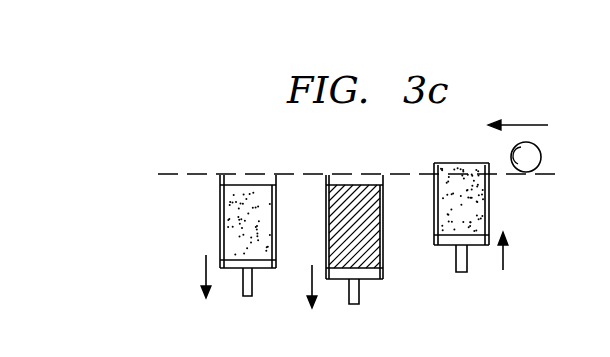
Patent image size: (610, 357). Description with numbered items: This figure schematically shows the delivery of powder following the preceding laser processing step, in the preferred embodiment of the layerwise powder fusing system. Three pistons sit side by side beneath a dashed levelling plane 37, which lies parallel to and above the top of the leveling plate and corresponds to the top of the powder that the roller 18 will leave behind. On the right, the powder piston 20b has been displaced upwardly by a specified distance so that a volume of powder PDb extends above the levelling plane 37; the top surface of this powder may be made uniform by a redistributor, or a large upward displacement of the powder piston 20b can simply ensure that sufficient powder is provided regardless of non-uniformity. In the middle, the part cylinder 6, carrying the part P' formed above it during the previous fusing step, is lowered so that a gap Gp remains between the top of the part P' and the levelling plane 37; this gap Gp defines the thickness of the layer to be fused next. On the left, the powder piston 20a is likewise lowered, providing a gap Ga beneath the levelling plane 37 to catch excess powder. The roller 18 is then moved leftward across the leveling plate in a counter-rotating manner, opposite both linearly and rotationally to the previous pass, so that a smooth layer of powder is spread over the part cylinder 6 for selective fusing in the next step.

The levelling plane 37 is at (198, 172).
The gap Ga is at (220, 181).
The powder piston 20a is at (264, 270).
The gap Gp is at (358, 174).
The part P' is at (354, 232).
The part cylinder 6 is at (383, 271).
The volume of powder PDb is at (456, 162).
The powder piston 20b is at (478, 247).
The roller 18 is at (541, 160).